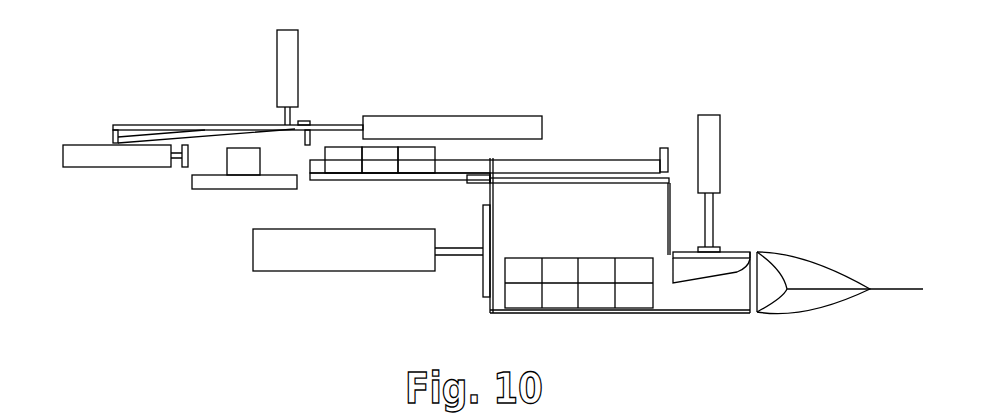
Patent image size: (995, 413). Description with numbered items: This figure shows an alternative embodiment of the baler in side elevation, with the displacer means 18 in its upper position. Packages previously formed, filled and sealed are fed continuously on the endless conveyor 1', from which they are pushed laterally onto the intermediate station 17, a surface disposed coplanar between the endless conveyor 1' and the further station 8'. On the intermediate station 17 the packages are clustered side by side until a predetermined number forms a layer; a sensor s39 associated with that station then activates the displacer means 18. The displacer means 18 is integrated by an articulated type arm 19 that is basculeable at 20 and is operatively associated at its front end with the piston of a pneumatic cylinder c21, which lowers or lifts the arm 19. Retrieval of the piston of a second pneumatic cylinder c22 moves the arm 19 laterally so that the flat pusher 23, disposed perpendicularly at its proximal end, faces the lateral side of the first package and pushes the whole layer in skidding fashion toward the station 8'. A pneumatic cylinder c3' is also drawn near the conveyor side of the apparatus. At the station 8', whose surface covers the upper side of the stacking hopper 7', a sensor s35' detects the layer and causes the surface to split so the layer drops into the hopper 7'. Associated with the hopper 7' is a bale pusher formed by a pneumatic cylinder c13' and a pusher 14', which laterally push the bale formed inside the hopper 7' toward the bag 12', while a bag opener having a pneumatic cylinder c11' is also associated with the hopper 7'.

The displacer means 18 is at (248, 100).
The articulated type arm 19 is at (193, 138).
The basculation point 20 is at (115, 141).
The pneumatic cylinder c21 is at (291, 58).
The pneumatic cylinder c22 is at (503, 125).
The pneumatic cylinder c3' is at (125, 174).
The endless conveyor 1' is at (244, 182).
The flat pusher 23 is at (307, 145).
The intermediate station 17 is at (385, 181).
The sensor s39 is at (483, 185).
The station 8' is at (485, 151).
The sensor s35' is at (654, 134).
The pneumatic cylinder c11' is at (731, 199).
The bag 12' is at (840, 276).
The pneumatic cylinder c13' is at (368, 264).
The pusher 14' is at (464, 255).
The stacking hopper 7' is at (579, 300).